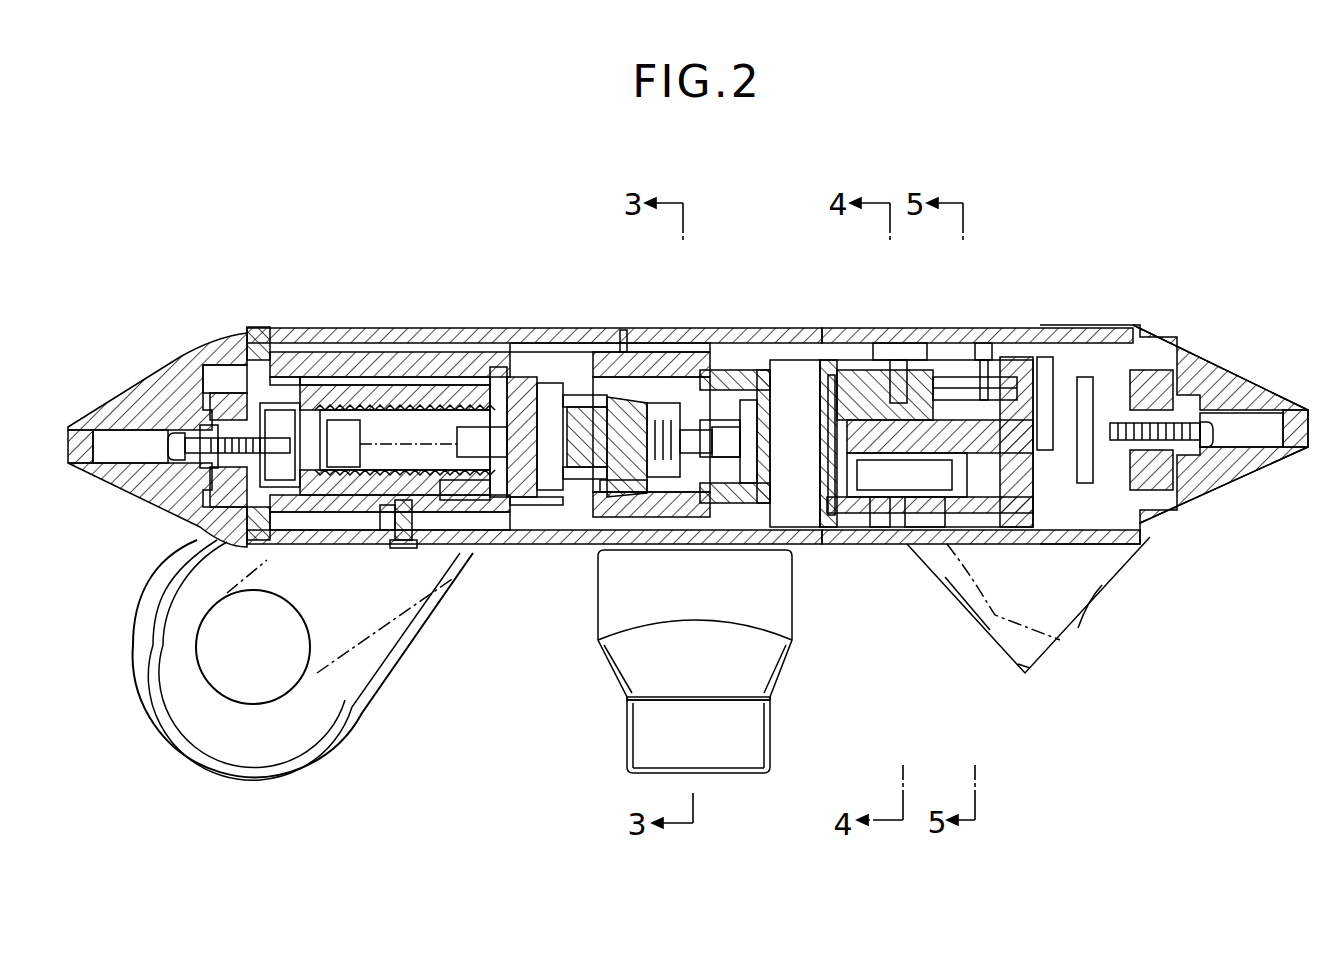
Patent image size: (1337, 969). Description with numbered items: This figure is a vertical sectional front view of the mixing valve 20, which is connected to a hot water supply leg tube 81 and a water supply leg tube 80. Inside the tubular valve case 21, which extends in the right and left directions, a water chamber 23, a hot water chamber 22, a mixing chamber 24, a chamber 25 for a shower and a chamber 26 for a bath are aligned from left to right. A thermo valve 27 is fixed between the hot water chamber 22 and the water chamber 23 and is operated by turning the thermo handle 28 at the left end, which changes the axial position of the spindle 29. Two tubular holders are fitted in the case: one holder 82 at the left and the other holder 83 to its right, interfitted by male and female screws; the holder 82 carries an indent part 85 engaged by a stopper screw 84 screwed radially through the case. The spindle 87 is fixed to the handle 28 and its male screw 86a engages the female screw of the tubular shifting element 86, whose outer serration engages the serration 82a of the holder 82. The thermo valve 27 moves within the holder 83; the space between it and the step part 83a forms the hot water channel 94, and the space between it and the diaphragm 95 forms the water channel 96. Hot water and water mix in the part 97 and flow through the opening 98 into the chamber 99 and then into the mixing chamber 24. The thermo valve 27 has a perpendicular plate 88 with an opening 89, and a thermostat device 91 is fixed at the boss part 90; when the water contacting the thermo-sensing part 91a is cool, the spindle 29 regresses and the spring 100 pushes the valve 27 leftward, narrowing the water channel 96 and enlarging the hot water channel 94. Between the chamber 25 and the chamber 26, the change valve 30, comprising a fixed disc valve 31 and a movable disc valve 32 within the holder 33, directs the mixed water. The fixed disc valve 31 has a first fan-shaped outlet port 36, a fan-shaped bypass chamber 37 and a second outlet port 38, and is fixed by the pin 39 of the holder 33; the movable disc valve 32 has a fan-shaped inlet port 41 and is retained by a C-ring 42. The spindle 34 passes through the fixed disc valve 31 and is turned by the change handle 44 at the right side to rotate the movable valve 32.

The mixing valve 20 is at (1128, 298).
The tubular valve case 21 is at (397, 345).
The hot water chamber 22 is at (617, 343).
The water chamber 23 is at (495, 343).
The mixing chamber 24 is at (768, 343).
The chamber for shower 25 is at (905, 343).
The chamber for bath 26 is at (983, 343).
The thermo valve 27 is at (525, 543).
The thermo handle 28 is at (150, 400).
The spindle 29 is at (455, 500).
The change valve 30 is at (823, 545).
The fixed disc valve 31 is at (865, 545).
The movable disc valve 32 is at (880, 545).
The holder 33 is at (955, 343).
The spindle 34 is at (980, 545).
The first fan-shaped outlet port 36 is at (925, 545).
The fan-shaped bypass chamber 37 is at (840, 392).
The second outlet port 38 is at (878, 343).
The pin 39 is at (1042, 355).
The fan-shaped inlet port 41 is at (855, 470).
The C-ring 42 is at (820, 328).
The change handle 44 is at (1215, 370).
The water supply leg tube 80 is at (383, 653).
The hot water supply leg tube 81 is at (997, 643).
The holder 82 is at (422, 343).
The serration 82a is at (450, 345).
The holder 83 is at (637, 343).
The step part 83a is at (638, 550).
The stopper screw 84 is at (392, 512).
The indent part 85 is at (412, 545).
The tubular shifting element 86 is at (315, 510).
The male screw 86a is at (300, 392).
The spindle 87 is at (213, 487).
The perpendicular plate 88 is at (568, 343).
The opening 89 is at (600, 343).
The boss part 90 is at (548, 512).
The thermostat device 91 is at (648, 545).
The thermo-sensing part 91a is at (740, 343).
The hot water channel 94 is at (610, 545).
The diaphragm 95 is at (503, 343).
The water channel 96 is at (545, 343).
The mixing part 97 is at (685, 343).
The opening 98 is at (713, 343).
The chamber 99 is at (832, 480).
The spring 100 is at (765, 545).